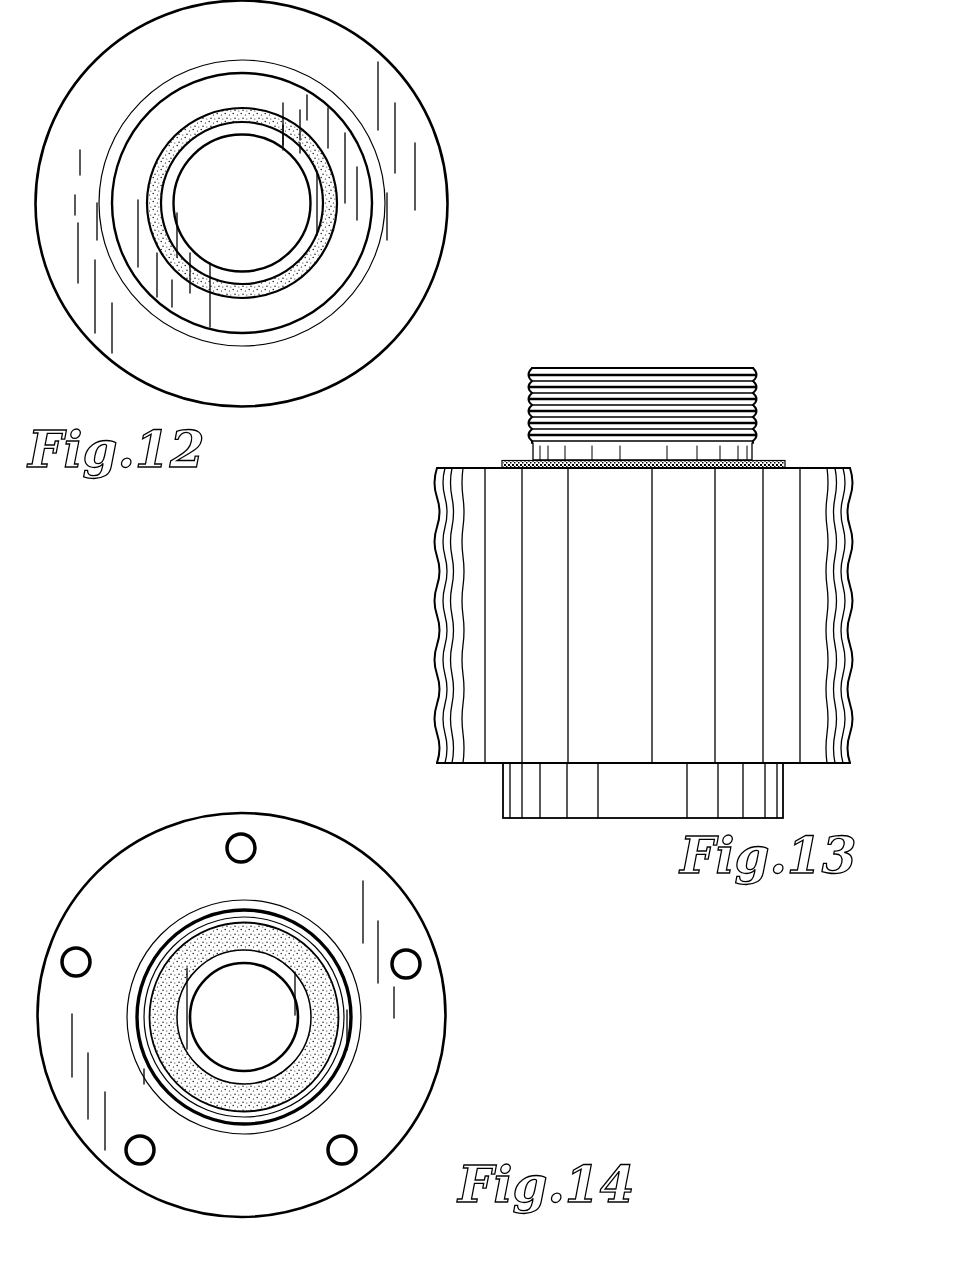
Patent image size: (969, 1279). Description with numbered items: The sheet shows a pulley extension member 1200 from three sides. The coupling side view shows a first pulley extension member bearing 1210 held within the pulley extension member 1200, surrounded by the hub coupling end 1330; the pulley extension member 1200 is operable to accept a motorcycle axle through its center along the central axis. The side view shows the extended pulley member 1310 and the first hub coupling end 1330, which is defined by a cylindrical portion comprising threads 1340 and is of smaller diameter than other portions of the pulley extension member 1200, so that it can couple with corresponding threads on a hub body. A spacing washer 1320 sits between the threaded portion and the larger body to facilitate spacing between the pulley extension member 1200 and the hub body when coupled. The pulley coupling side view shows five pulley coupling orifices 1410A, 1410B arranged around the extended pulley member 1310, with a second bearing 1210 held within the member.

In FIG. 12, the pulley extension member 1200 is at (454, 124).
In FIG. 13, the pulley extension member 1200 is at (715, 333).
In FIG. 14, the pulley extension member 1200 is at (188, 795).
In FIG. 12, the pulley extension member bearing 1210 is at (177, 133).
In FIG. 14, the pulley extension member bearing 1210 is at (163, 968).
In FIG. 13, the extended pulley member 1310 is at (503, 788).
In FIG. 14, the extended pulley member 1310 is at (297, 910).
In FIG. 13, the spacing washer 1320 is at (787, 464).
In FIG. 12, the hub coupling end 1330 is at (223, 83).
In FIG. 13, the hub coupling end 1330 is at (485, 360).
In FIG. 13, the threads 1340 is at (758, 388).
In FIG. 14, the pulley coupling orifice 1410A is at (124, 1149).
In FIG. 14, the pulley coupling orifice 1410B is at (224, 849).